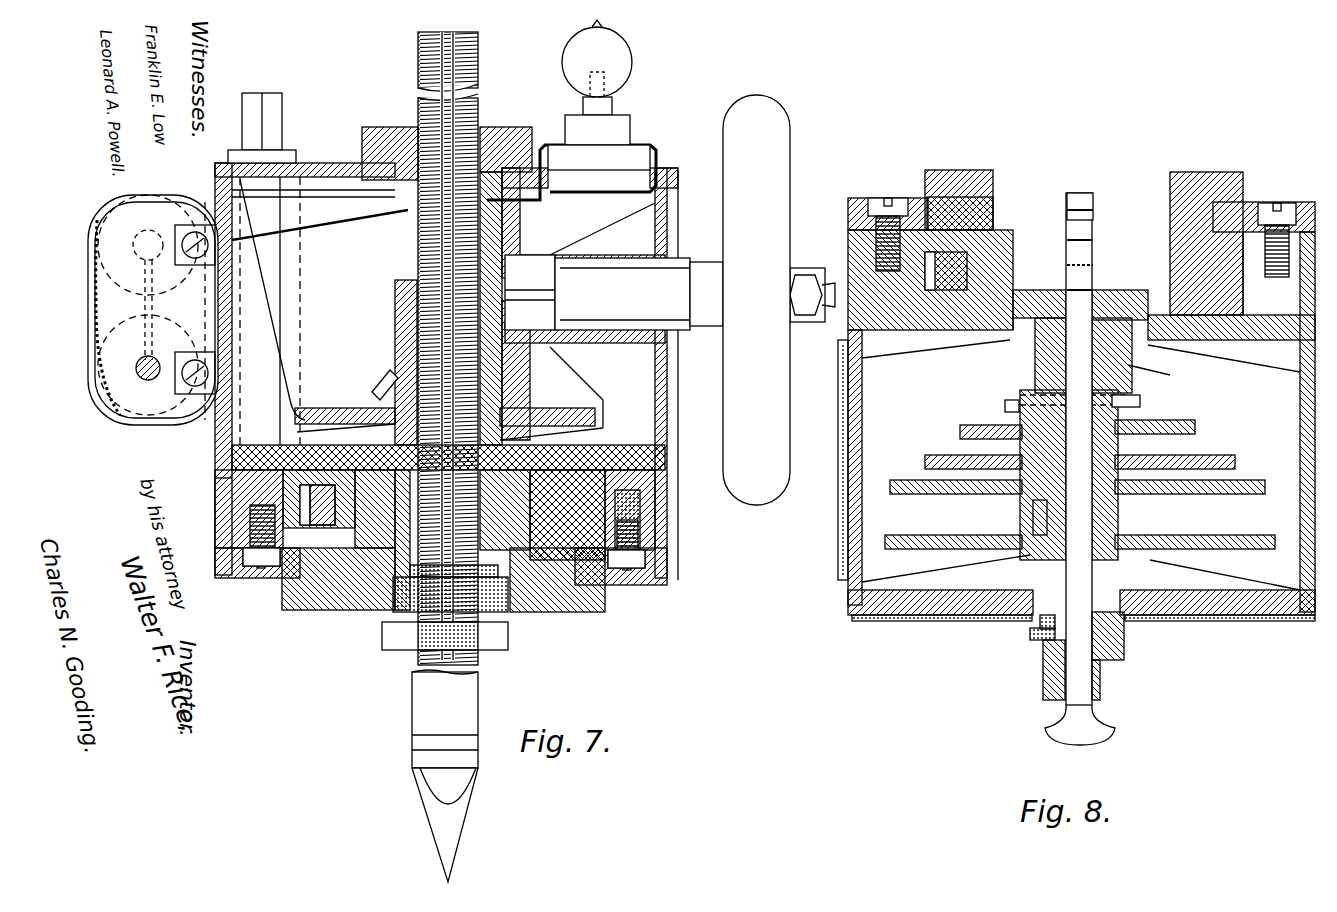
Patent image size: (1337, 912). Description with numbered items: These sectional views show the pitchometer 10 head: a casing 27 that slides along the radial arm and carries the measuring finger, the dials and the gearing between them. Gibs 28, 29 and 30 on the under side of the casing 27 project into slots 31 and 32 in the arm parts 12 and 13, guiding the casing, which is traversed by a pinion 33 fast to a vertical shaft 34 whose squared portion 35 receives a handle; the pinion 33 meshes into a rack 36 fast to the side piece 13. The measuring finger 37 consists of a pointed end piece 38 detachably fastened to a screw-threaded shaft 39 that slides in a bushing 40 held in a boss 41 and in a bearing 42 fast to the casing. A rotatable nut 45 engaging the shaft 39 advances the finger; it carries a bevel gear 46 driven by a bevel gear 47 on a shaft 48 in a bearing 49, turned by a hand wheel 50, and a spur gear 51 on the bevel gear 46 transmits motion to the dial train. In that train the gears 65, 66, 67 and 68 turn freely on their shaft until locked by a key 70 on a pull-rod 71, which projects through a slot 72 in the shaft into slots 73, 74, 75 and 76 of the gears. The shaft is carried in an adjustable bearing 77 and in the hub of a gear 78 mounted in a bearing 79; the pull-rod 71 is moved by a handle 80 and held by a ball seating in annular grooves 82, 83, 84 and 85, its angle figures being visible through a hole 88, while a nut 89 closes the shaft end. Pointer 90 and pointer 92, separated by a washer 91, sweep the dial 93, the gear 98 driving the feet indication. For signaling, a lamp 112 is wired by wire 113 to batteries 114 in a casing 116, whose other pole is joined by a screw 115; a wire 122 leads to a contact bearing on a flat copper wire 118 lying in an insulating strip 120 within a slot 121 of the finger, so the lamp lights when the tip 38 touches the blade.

In FIG. 7, the device 10 is at (707, 525).
In FIG. 7, the part of the arm 12 is at (570, 600).
In FIG. 8, the part of the arm 12 is at (1195, 185).
In FIG. 7, the side piece of the arm 13 is at (330, 600).
In FIG. 8, the side piece of the arm 13 is at (975, 180).
In FIG. 7, the casing 27 is at (668, 395).
In FIG. 8, the casing 27 is at (1302, 465).
In FIG. 7, the gib 28 is at (600, 500).
In FIG. 8, the gib 28 is at (1245, 310).
In FIG. 7, the gib 29 is at (667, 572).
In FIG. 8, the gib 29 is at (1298, 210).
In FIG. 7, the gib 30 is at (243, 555).
In FIG. 8, the gib 30 is at (865, 205).
In FIG. 7, the slot 31 is at (612, 590).
In FIG. 8, the slot 31 is at (1243, 195).
In FIG. 7, the slot 32 is at (292, 585).
In FIG. 8, the slot 32 is at (985, 205).
In FIG. 7, the pinion 33 is at (215, 478).
In FIG. 7, the vertical shaft 34 is at (276, 300).
In FIG. 7, the squared portion 35 is at (275, 112).
In FIG. 7, the rack 36 is at (300, 500).
In FIG. 8, the rack 36 is at (955, 270).
In FIG. 7, the measuring finger 37 is at (464, 776).
In FIG. 7, the end piece 38 is at (432, 815).
In FIG. 7, the screw-threaded shaft 39 is at (455, 345).
In FIG. 7, the bushing 40 is at (390, 636).
In FIG. 7, the boss 41 is at (498, 598).
In FIG. 7, the bearing 42 is at (512, 150).
In FIG. 7, the rotatable nut 45 is at (398, 330).
In FIG. 7, the bevel gear 46 is at (380, 390).
In FIG. 7, the bevel gear 47 is at (525, 368).
In FIG. 7, the shaft 48 is at (655, 290).
In FIG. 7, the bearing 49 is at (615, 275).
In FIG. 7, the hand wheel 50 is at (765, 140).
In FIG. 7, the spur gear 51 is at (590, 418).
In FIG. 8, the gear 65 is at (1005, 405).
In FIG. 8, the gear 66 is at (962, 428).
In FIG. 8, the gear 67 is at (927, 458).
In FIG. 8, the gear 68 is at (930, 494).
In FIG. 8, the key 70 is at (1140, 401).
In FIG. 8, the pull-rod 71 is at (1082, 200).
In FIG. 8, the slot in the shaft 72 is at (1087, 428).
In FIG. 8, the slot 73 is at (1128, 388).
In FIG. 8, the slot 74 is at (1130, 425).
In FIG. 8, the slot 75 is at (1125, 460).
In FIG. 8, the slot 76 is at (1130, 495).
In FIG. 8, the adjustable bearing 77 is at (1115, 298).
In FIG. 8, the gear 78 is at (915, 550).
In FIG. 8, the bearing 79 is at (1145, 578).
In FIG. 8, the handle 80 is at (1058, 732).
In FIG. 8, the annular groove 82 is at (1078, 300).
In FIG. 8, the annular groove 83 is at (1090, 264).
In FIG. 8, the annular groove 84 is at (1066, 240).
In FIG. 8, the annular groove 85 is at (1094, 210).
In FIG. 8, the hole 88 is at (1100, 690).
In FIG. 8, the nut 89 is at (1048, 660).
In FIG. 8, the pointer 90 is at (1125, 650).
In FIG. 8, the washer 91 is at (1035, 638).
In FIG. 8, the pointer 92 is at (1040, 622).
In FIG. 8, the dial 93 is at (950, 618).
In FIG. 8, the gear 98 is at (1033, 513).
In FIG. 7, the electric lamp 112 is at (622, 60).
In FIG. 7, the wire 113 is at (345, 225).
In FIG. 7, the batteries 114 is at (98, 280).
In FIG. 7, the screw 115 is at (140, 382).
In FIG. 7, the casing 116 is at (112, 378).
In FIG. 8, the casing 116 is at (842, 585).
In FIG. 7, the flat copper wire 118 is at (445, 112).
In FIG. 7, the strip of insulating material 120 is at (418, 56).
In FIG. 7, the slot 121 is at (478, 44).
In FIG. 7, the wire 122 is at (595, 192).